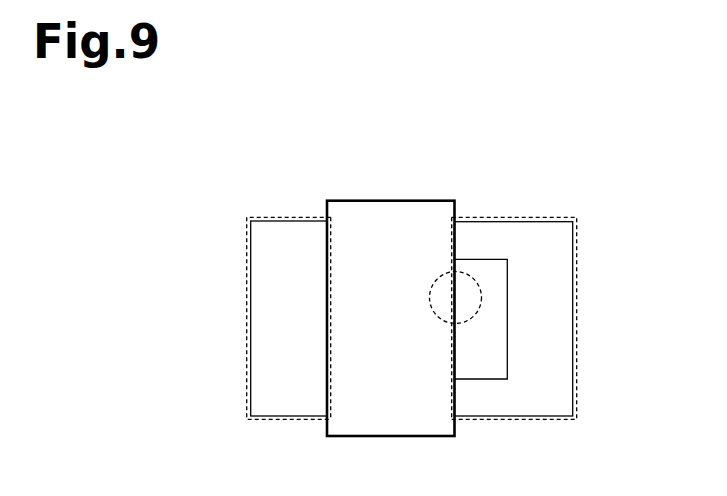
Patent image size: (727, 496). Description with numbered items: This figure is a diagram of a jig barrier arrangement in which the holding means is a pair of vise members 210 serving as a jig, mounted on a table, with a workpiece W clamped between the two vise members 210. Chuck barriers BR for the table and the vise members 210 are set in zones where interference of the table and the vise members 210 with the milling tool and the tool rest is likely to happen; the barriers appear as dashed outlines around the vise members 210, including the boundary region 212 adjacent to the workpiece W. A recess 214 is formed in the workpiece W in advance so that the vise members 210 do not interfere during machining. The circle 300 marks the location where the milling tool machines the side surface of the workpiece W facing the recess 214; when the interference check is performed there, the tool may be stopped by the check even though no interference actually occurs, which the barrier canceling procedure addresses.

The vise member 210 is at (258, 327).
The first region of substrate 212 is at (452, 248).
The recess 214 is at (498, 338).
The circle 300 is at (437, 316).
The workpiece W is at (373, 208).
The chuck barrier BR is at (577, 249).